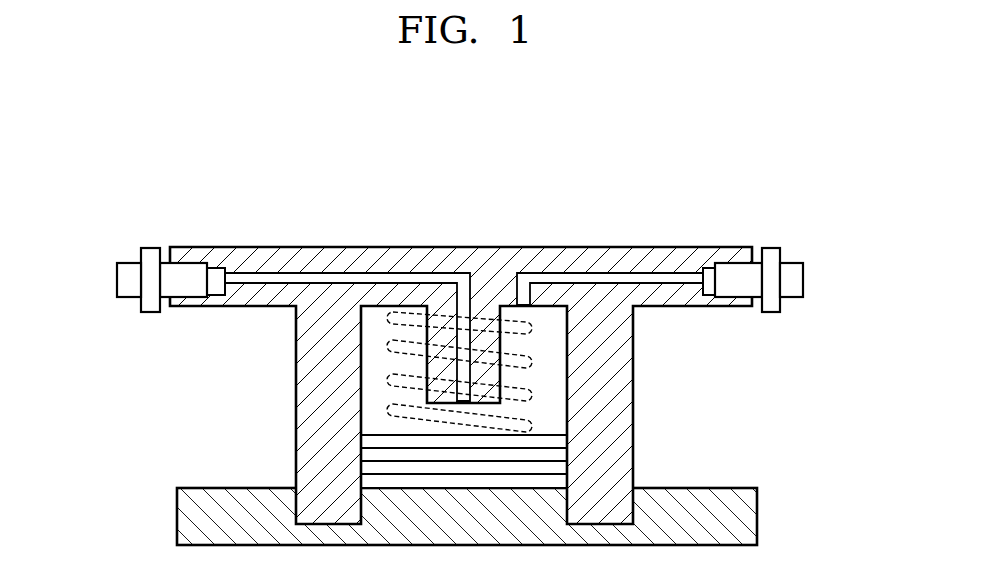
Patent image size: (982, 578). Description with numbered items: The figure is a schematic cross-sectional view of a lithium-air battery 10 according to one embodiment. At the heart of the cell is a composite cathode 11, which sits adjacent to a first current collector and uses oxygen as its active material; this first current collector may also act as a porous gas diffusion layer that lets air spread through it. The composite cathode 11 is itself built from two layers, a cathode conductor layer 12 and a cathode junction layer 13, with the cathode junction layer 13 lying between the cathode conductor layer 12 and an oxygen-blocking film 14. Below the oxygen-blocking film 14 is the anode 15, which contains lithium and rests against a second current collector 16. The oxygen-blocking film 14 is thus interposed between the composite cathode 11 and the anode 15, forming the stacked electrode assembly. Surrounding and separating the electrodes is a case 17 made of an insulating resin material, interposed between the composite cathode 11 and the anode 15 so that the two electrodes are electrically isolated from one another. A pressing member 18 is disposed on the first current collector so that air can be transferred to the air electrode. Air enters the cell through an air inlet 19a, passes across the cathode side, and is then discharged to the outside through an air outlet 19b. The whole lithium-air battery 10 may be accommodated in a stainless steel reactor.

The lithium-air battery 10 is at (724, 204).
The composite cathode 11 is at (546, 431).
The cathode conductor layer 12 is at (555, 437).
The cathode junction layer 13 is at (555, 453).
The oxygen-blocking film 14 is at (555, 468).
The anode 15 is at (555, 483).
The second current collector 16 is at (757, 522).
The case 17 is at (298, 360).
The pressing member 18 is at (535, 363).
The air inlet 19a is at (105, 280).
The air outlet 19b is at (818, 280).